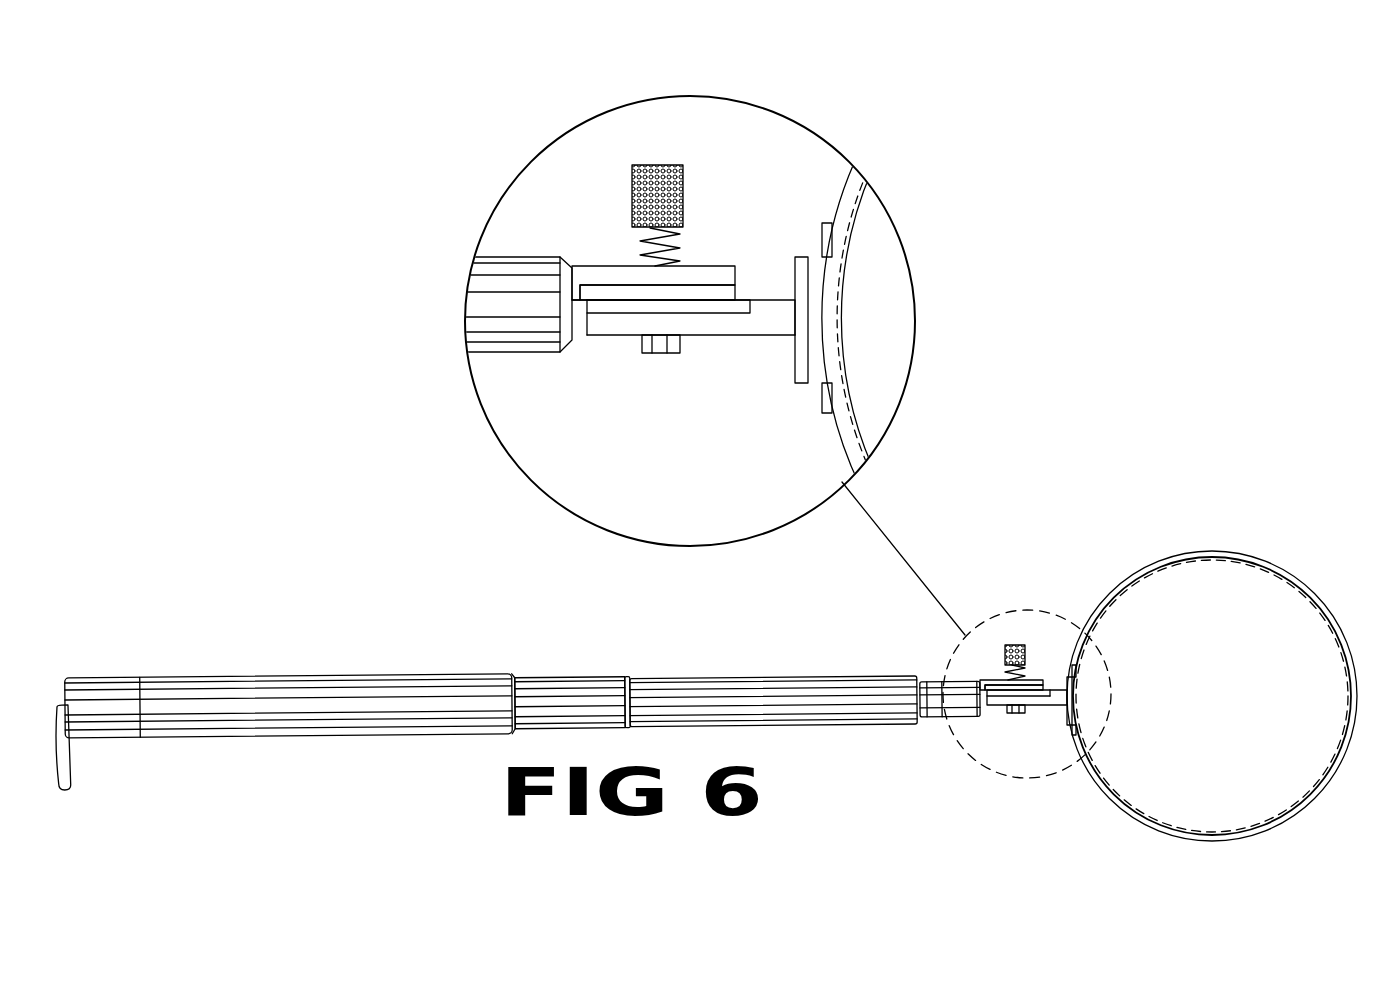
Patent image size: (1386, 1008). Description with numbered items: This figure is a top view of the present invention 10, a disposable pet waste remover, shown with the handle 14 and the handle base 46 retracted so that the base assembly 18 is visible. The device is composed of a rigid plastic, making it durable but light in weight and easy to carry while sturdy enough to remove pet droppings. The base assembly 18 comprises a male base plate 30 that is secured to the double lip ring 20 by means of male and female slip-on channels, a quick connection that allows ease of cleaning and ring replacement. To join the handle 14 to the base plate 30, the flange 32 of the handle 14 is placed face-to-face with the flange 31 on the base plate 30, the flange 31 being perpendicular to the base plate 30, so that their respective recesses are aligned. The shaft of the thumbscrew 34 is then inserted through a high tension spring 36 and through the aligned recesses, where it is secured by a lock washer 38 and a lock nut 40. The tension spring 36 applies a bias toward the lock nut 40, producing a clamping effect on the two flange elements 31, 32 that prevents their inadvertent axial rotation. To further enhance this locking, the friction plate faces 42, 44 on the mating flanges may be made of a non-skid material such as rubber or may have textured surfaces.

The present invention 10 is at (1074, 382).
The handle 14 is at (580, 682).
The base assembly 18 is at (713, 182).
The double lip ring 20 is at (1170, 558).
The male base plate 30 is at (803, 258).
The flange 31 is at (757, 325).
The flange 32 is at (592, 277).
The thumbscrew 34 is at (652, 165).
The high tension spring 36 is at (642, 252).
The lock washer 38 is at (642, 337).
The lock nut 40 is at (663, 352).
The friction plate face 42 is at (733, 290).
The friction plate face 44 is at (745, 307).
The handle base 46 is at (848, 687).